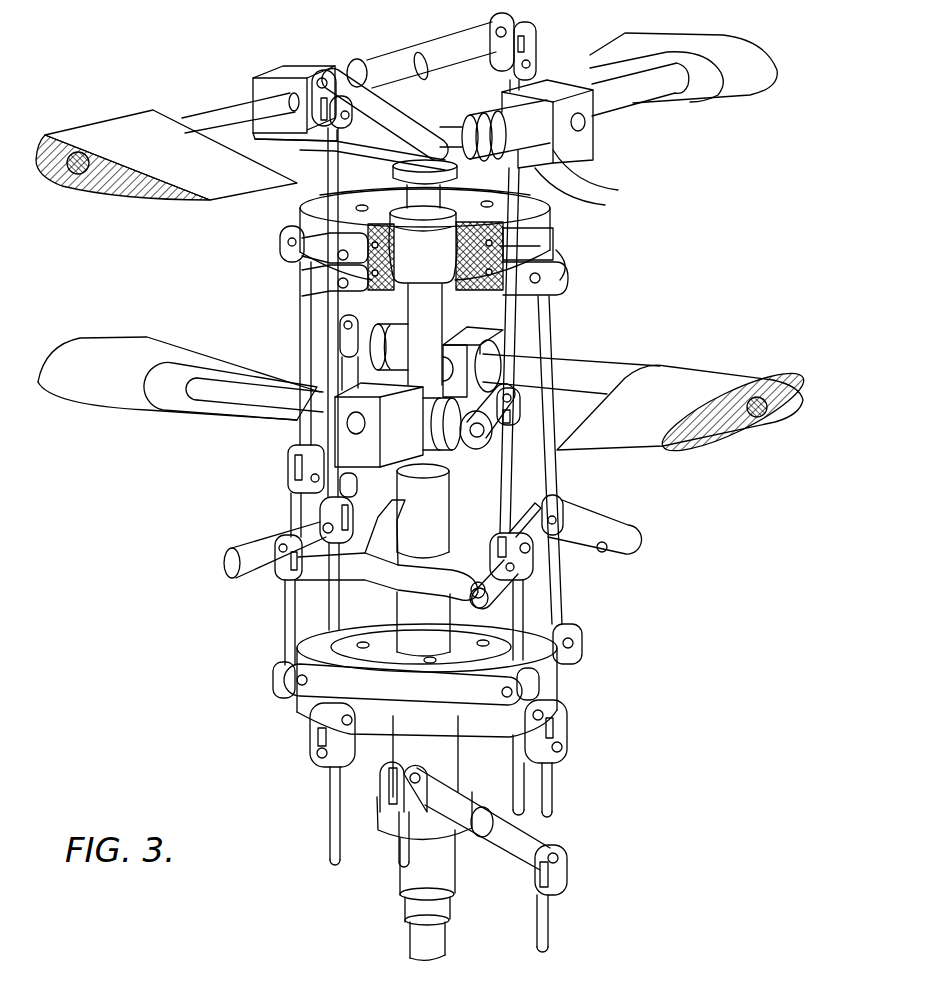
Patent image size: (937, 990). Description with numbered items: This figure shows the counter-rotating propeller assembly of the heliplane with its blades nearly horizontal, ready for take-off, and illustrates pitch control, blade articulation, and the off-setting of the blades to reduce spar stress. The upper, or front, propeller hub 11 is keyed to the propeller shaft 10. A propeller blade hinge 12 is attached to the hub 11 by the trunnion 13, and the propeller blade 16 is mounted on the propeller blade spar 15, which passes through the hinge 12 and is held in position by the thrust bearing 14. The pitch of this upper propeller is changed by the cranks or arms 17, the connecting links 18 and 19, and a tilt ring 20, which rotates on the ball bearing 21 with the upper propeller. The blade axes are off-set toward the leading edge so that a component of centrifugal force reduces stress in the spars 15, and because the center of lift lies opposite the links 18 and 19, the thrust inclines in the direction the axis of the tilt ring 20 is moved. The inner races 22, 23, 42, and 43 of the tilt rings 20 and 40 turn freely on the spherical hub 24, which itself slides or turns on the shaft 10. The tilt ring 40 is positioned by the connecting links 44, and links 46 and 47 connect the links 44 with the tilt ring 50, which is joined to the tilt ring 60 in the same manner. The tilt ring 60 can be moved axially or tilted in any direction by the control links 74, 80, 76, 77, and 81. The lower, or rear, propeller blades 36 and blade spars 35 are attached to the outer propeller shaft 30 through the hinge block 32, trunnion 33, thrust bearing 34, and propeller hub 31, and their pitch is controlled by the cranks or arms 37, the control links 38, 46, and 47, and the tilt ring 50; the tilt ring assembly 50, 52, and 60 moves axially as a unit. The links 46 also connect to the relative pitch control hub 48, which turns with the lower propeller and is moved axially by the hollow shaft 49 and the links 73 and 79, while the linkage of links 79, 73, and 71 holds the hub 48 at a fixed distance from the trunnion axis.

The propeller shaft 10 is at (407, 943).
The upper propeller hub 11 is at (593, 148).
The propeller blade hinge 12 is at (285, 70).
The trunnion 13 is at (588, 120).
The thrust bearing 14 is at (365, 62).
The propeller blade spar 15 is at (240, 108).
The propeller blade 16 is at (100, 125).
The cranks or arms 17 is at (443, 73).
The connecting link 18 is at (260, 82).
The connecting link 19 is at (330, 185).
The tilt ring 20 is at (300, 220).
The ball bearing 21 is at (553, 243).
The inner race of tilt ring 22 is at (523, 213).
The inner race of tilt ring 23 is at (463, 243).
The spherical hub 24 is at (448, 280).
The outer propeller shaft 30 is at (400, 903).
The propeller hub 31 is at (335, 435).
The hinge block 32 is at (350, 393).
The trunnion 33 is at (343, 423).
The thrust bearing 34 is at (383, 327).
The blade spar 35 is at (257, 383).
The propeller blade 36 is at (110, 338).
The cranks or arms 37 is at (362, 320).
The control link 38 is at (555, 497).
The tilt ring 40 is at (288, 262).
The inner race of tilt ring 42 is at (456, 255).
The inner race of tilt ring 43 is at (550, 303).
The connecting link 44 is at (327, 320).
The link 46 is at (320, 513).
The link 47 is at (327, 595).
The relative pitch control hub 48 is at (263, 582).
The hollow shaft 49 is at (467, 775).
The tilt ring 50 is at (560, 667).
The tilt ring assembly member 52 is at (527, 625).
The tilt ring 60 is at (560, 690).
The link 71 is at (547, 920).
The link 73 is at (537, 833).
The control link 74 is at (313, 732).
The control link 76 is at (557, 728).
The control link 77 is at (553, 770).
The link 79 is at (397, 848).
The control link 80 is at (327, 780).
The control link 81 is at (495, 812).